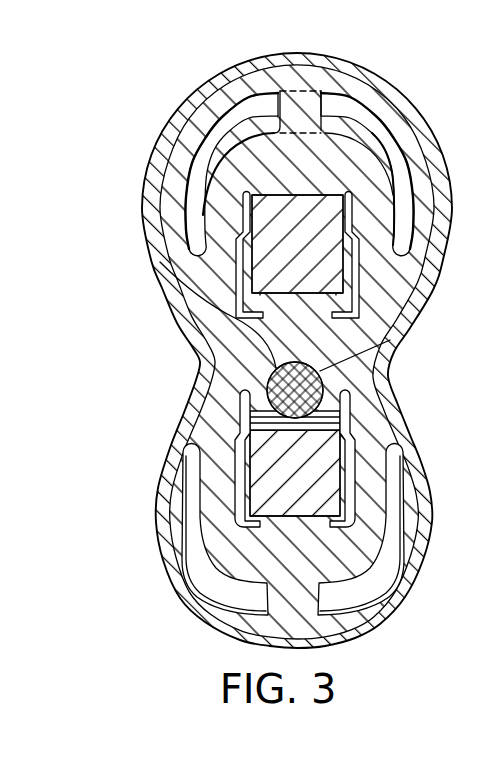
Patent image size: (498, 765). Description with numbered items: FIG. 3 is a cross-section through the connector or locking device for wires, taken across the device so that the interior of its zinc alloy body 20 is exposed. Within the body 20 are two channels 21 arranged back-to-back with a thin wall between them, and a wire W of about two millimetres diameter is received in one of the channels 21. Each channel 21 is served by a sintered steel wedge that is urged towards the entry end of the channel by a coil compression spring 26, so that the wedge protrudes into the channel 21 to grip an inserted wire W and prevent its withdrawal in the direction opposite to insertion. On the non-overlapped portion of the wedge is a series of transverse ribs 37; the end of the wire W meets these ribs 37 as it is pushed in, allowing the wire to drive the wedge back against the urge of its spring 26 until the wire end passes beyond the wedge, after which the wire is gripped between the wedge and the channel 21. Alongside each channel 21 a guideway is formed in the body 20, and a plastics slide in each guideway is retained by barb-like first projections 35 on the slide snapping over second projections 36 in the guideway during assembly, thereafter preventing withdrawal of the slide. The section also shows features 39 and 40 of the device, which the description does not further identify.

The body 20 is at (203, 420).
The channel 21 is at (305, 338).
The coil compression spring 26 is at (247, 303).
The first projection 35 is at (280, 243).
The second projection 36 is at (263, 323).
The transverse rib 37 is at (340, 406).
The retaining band 39 is at (200, 175).
The channel slot 40 is at (366, 112).
The wire W is at (268, 371).